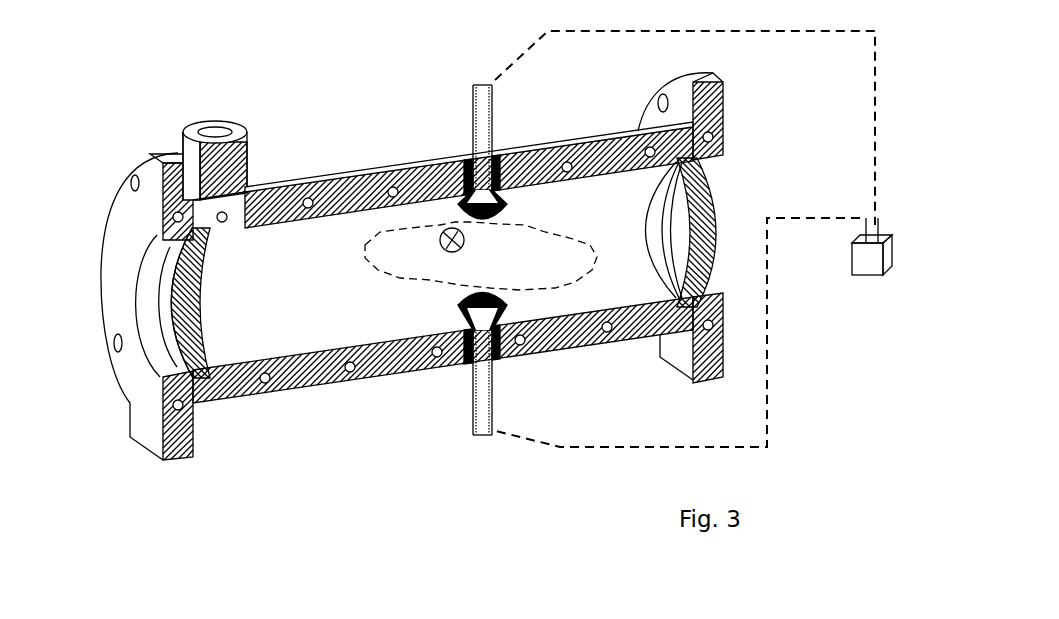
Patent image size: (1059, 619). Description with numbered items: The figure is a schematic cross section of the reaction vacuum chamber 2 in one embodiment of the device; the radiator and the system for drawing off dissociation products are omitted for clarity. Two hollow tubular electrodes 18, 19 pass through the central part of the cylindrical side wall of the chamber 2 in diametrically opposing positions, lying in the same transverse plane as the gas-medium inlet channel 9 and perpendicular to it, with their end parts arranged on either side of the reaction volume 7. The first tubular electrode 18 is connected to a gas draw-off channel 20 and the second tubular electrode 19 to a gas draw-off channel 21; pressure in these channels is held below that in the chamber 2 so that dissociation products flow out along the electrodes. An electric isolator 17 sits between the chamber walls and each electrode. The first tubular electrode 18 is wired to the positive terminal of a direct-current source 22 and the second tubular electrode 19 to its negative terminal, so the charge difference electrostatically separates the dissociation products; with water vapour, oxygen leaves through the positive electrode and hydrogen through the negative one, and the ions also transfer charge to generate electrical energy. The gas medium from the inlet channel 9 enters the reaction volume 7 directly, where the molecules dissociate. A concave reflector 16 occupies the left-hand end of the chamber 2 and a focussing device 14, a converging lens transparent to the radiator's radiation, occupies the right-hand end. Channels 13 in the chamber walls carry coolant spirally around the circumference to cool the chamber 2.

The reaction vacuum chamber 2 is at (345, 184).
The reaction volume 7 is at (363, 258).
The gas-medium inlet channel 9 is at (457, 248).
The channels 13 is at (443, 280).
The focussing device 14 is at (702, 187).
The concave reflector 16 is at (185, 252).
The electric isolator 17 is at (463, 160).
The first tubular electrode 18 is at (492, 114).
The second tubular electrode 19 is at (492, 390).
The gas draw-off channel 20 is at (480, 108).
The gas draw-off channel 21 is at (480, 412).
The direct-current source 22 is at (868, 263).